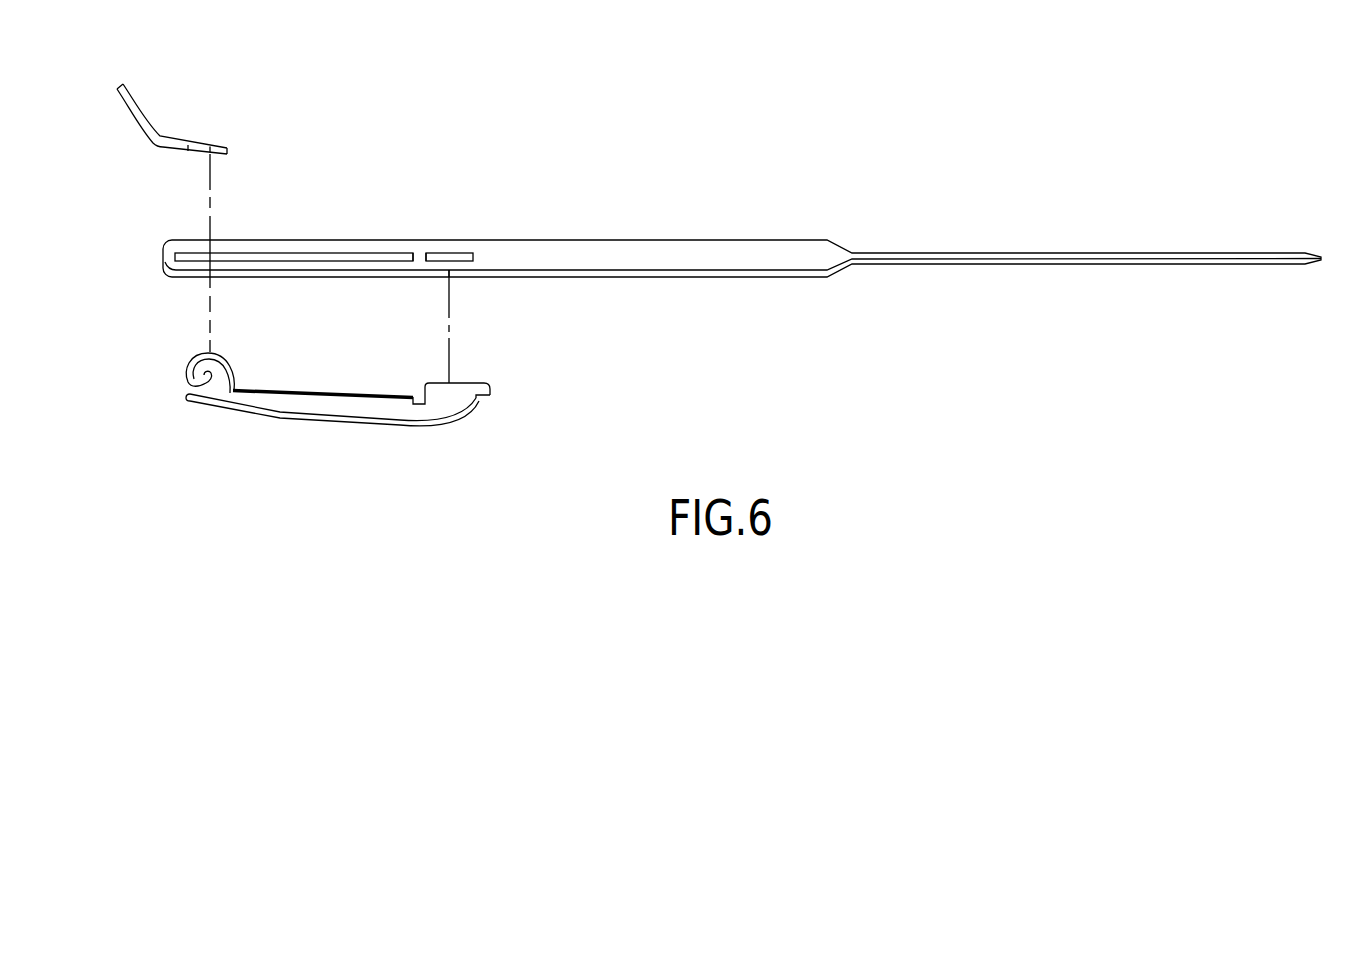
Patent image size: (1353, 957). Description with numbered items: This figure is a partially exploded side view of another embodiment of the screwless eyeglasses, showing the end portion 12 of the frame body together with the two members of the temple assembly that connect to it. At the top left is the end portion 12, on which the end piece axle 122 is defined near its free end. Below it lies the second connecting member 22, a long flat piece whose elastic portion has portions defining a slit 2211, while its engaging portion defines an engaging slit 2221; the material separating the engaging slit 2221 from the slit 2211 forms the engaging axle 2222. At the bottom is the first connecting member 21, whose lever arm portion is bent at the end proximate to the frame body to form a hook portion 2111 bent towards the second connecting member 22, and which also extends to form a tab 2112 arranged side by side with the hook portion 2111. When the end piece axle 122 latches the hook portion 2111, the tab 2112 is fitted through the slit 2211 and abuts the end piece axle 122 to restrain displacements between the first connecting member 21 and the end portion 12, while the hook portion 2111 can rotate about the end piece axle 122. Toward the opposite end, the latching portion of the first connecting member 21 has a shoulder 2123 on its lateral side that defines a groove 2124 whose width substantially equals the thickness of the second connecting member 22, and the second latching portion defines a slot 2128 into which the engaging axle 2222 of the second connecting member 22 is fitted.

The end portion 12 is at (193, 104).
The end piece axle 122 is at (204, 147).
The second connecting member 22 is at (742, 209).
The slit 2211 is at (297, 256).
The engaging slit 2221 is at (455, 255).
The engaging axle 2222 is at (419, 257).
The first connecting member 21 is at (336, 396).
The hook portion 2111 is at (205, 352).
The tab 2112 is at (186, 394).
The slot 2128 is at (423, 394).
The shoulder 2123 is at (486, 380).
The groove 2124 is at (486, 403).